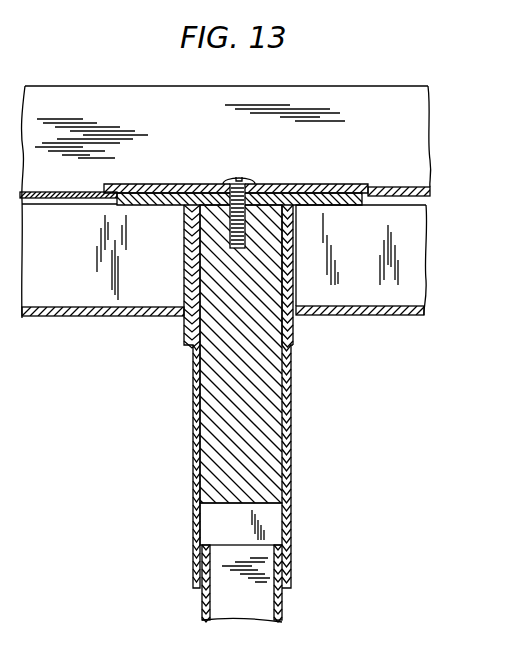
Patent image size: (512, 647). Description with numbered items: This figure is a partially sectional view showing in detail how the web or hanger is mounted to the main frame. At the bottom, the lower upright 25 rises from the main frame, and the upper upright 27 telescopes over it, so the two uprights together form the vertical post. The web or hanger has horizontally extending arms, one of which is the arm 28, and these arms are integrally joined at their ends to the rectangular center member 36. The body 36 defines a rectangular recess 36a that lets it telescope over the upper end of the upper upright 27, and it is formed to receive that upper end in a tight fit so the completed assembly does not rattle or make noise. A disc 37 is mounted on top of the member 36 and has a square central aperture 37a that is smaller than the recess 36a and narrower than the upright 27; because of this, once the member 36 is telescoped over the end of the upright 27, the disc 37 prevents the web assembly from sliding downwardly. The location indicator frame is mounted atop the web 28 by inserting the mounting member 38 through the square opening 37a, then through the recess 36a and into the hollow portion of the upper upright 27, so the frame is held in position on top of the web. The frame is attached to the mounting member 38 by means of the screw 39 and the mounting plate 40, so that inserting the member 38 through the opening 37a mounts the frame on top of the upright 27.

The lower upright 25 is at (283, 612).
The upper upright 27 is at (292, 530).
The horizontally extending arm 28 is at (412, 282).
The rectangular center member 36 is at (292, 352).
The rectangular recess 36a is at (295, 334).
The disc 37 is at (350, 203).
The square central aperture 37a is at (302, 186).
The mounting member 38 is at (270, 468).
The screw 39 is at (247, 177).
The mounting plate 40 is at (176, 186).